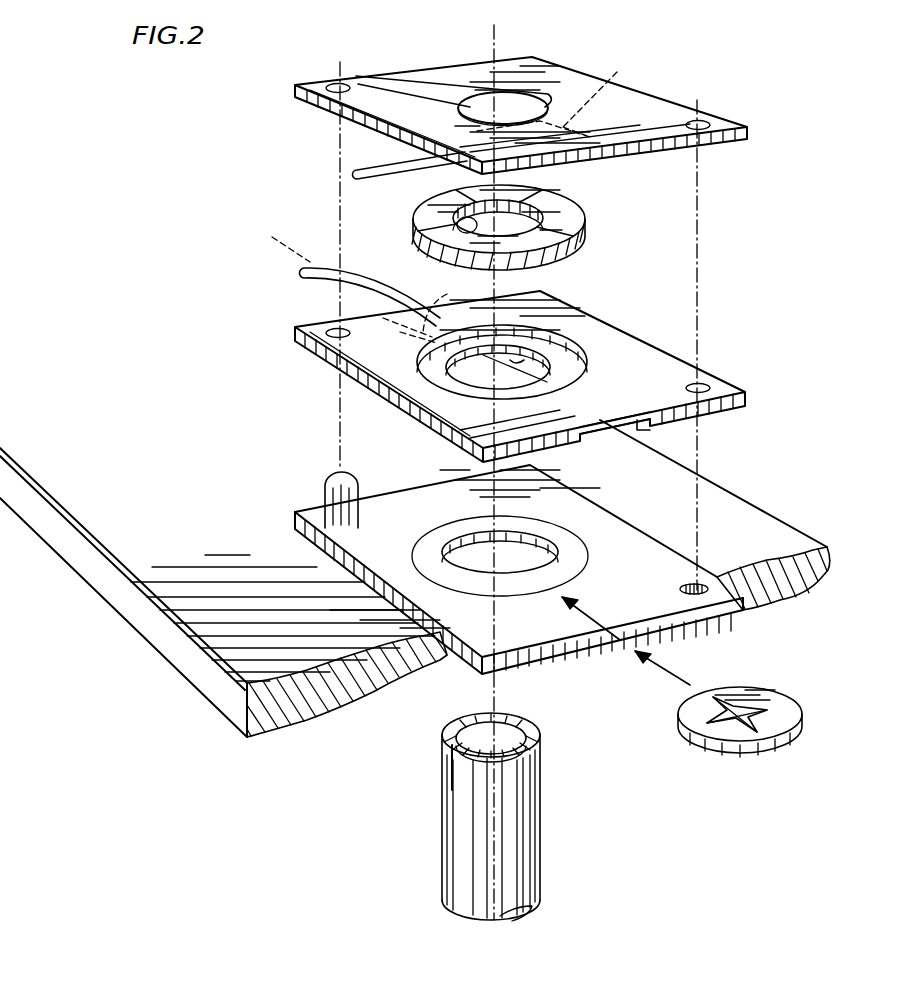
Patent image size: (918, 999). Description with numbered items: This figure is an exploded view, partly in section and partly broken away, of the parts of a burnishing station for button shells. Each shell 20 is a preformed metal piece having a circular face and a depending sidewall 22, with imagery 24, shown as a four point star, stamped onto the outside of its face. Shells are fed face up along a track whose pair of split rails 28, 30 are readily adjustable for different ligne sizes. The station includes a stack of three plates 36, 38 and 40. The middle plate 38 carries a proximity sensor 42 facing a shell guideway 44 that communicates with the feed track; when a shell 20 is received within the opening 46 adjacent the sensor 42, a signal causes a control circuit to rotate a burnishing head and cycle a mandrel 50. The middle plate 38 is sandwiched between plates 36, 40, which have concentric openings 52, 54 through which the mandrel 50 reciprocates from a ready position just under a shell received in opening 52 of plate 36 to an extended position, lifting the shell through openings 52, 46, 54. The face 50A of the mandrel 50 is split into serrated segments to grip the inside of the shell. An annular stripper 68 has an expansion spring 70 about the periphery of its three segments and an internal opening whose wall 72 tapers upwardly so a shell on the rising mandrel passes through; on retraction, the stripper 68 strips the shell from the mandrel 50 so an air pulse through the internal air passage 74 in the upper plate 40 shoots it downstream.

The shell 20 is at (690, 741).
The sidewall 22 is at (735, 757).
The imagery 24 is at (745, 712).
The split rail 28 is at (133, 547).
The split rail 30 is at (562, 547).
The upper plate 36 is at (608, 538).
The middle plate 38 is at (632, 352).
The upper plate 40 is at (648, 108).
The proximity sensor 42 is at (430, 310).
The shell guideway 44 is at (600, 430).
The opening 46 is at (533, 355).
The mandrel 50 is at (442, 842).
The face of mandrel 50A is at (460, 714).
The opening 52 is at (462, 532).
The opening 54 is at (477, 92).
The annular stripper 68 is at (568, 224).
The expansion spring 70 is at (555, 262).
The wall 72 is at (424, 243).
The internal air passage 74 is at (385, 196).